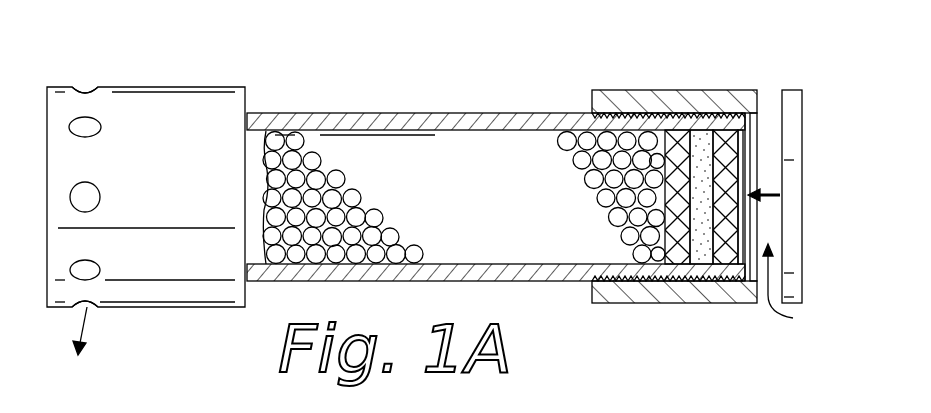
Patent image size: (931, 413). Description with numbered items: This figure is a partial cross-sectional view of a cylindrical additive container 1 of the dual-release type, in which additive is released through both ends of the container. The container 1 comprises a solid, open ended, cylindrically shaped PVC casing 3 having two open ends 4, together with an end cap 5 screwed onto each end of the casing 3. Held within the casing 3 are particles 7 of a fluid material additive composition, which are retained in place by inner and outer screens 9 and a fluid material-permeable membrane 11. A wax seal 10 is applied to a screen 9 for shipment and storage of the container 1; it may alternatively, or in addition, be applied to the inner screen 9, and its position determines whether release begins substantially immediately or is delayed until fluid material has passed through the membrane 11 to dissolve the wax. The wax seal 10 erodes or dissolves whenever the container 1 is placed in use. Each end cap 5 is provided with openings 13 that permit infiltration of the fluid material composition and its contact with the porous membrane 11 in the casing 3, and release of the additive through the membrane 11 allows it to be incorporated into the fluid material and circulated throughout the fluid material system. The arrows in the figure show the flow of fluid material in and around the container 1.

The container 1 is at (208, 325).
The casing 3 is at (453, 114).
The open end 4 is at (766, 162).
The end cap 5 is at (645, 98).
The particles 7 is at (562, 132).
The screen 9 is at (724, 140).
The wax seal 10 is at (742, 262).
The fluid material-permeable membrane 11 is at (700, 250).
The opening 13 is at (88, 85).